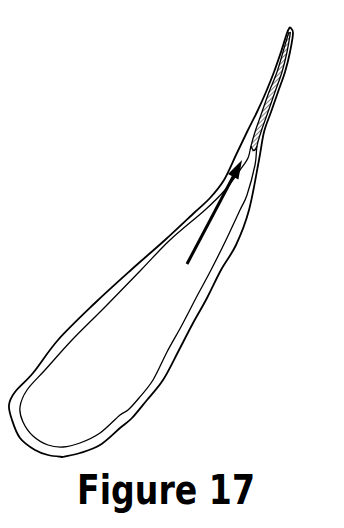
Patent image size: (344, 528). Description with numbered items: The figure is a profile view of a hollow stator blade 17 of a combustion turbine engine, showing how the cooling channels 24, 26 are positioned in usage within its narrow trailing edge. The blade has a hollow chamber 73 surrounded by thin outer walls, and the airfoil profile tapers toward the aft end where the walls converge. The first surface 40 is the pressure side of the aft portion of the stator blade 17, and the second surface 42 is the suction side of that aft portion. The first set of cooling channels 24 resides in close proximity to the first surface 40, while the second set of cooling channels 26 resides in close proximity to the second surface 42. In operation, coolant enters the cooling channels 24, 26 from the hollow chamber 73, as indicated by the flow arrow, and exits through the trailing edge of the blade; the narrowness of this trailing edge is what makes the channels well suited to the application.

The stator blade 17 is at (172, 242).
The first surface 40 is at (262, 98).
The second surface 42 is at (274, 106).
The first set of cooling channels 24 is at (254, 131).
The second set of cooling channels 26 is at (259, 134).
The hollow chamber 73 is at (111, 389).